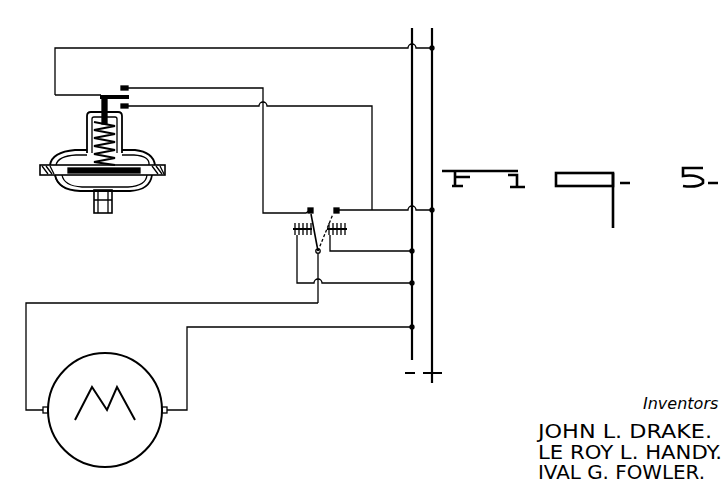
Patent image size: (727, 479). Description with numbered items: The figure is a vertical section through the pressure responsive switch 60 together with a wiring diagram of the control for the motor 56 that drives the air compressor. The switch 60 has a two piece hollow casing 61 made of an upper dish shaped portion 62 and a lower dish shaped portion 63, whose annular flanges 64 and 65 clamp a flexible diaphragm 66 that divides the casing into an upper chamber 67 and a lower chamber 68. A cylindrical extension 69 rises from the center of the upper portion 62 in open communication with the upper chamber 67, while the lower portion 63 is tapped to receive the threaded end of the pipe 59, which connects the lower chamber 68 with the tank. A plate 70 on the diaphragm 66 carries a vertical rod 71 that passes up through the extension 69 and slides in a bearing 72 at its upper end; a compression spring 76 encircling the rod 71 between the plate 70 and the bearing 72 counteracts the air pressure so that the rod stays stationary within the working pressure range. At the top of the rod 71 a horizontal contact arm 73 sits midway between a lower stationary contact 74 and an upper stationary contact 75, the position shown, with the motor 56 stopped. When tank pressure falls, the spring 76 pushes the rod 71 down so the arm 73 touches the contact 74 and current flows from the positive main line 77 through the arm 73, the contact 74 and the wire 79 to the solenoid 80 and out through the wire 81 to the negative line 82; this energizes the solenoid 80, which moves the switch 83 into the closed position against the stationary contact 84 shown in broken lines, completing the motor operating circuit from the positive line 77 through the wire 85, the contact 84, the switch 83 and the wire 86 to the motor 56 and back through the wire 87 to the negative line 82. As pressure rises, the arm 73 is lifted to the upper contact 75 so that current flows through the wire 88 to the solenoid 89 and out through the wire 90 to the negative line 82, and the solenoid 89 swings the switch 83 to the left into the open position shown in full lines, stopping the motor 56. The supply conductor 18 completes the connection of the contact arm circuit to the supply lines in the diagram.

The supply conductor 18 is at (357, 48).
The motor 56 is at (147, 429).
The pipe 59 is at (96, 208).
The pressure responsive switch 60 is at (54, 128).
The hollow casing 61 is at (156, 156).
The upper portion 62 is at (78, 152).
The lower portion 63 is at (82, 188).
The annular flange 64 is at (50, 164).
The annular flange 65 is at (52, 177).
The flexible diaphragm 66 is at (156, 165).
The upper chamber 67 is at (145, 152).
The lower chamber 68 is at (126, 185).
The cylindrical extension 69 is at (86, 120).
The plate 70 is at (118, 150).
The vertical rod 71 is at (101, 95).
The bearing 72 is at (130, 106).
The contact arm 73 is at (118, 84).
The stationary contact 74 is at (131, 95).
The stationary contact 75 is at (127, 86).
The compression spring 76 is at (121, 129).
The positive main line 77 is at (436, 78).
The wire 79 is at (315, 112).
The solenoid 80 is at (350, 229).
The wire 81 is at (350, 253).
The negative line 82 is at (414, 117).
The switch 83 is at (312, 206).
The stationary contact 84 is at (337, 207).
The wire 85 is at (388, 209).
The wire 86 is at (236, 283).
The wire 87 is at (287, 329).
The wire 88 is at (252, 80).
The solenoid 89 is at (293, 229).
The wire 90 is at (297, 262).